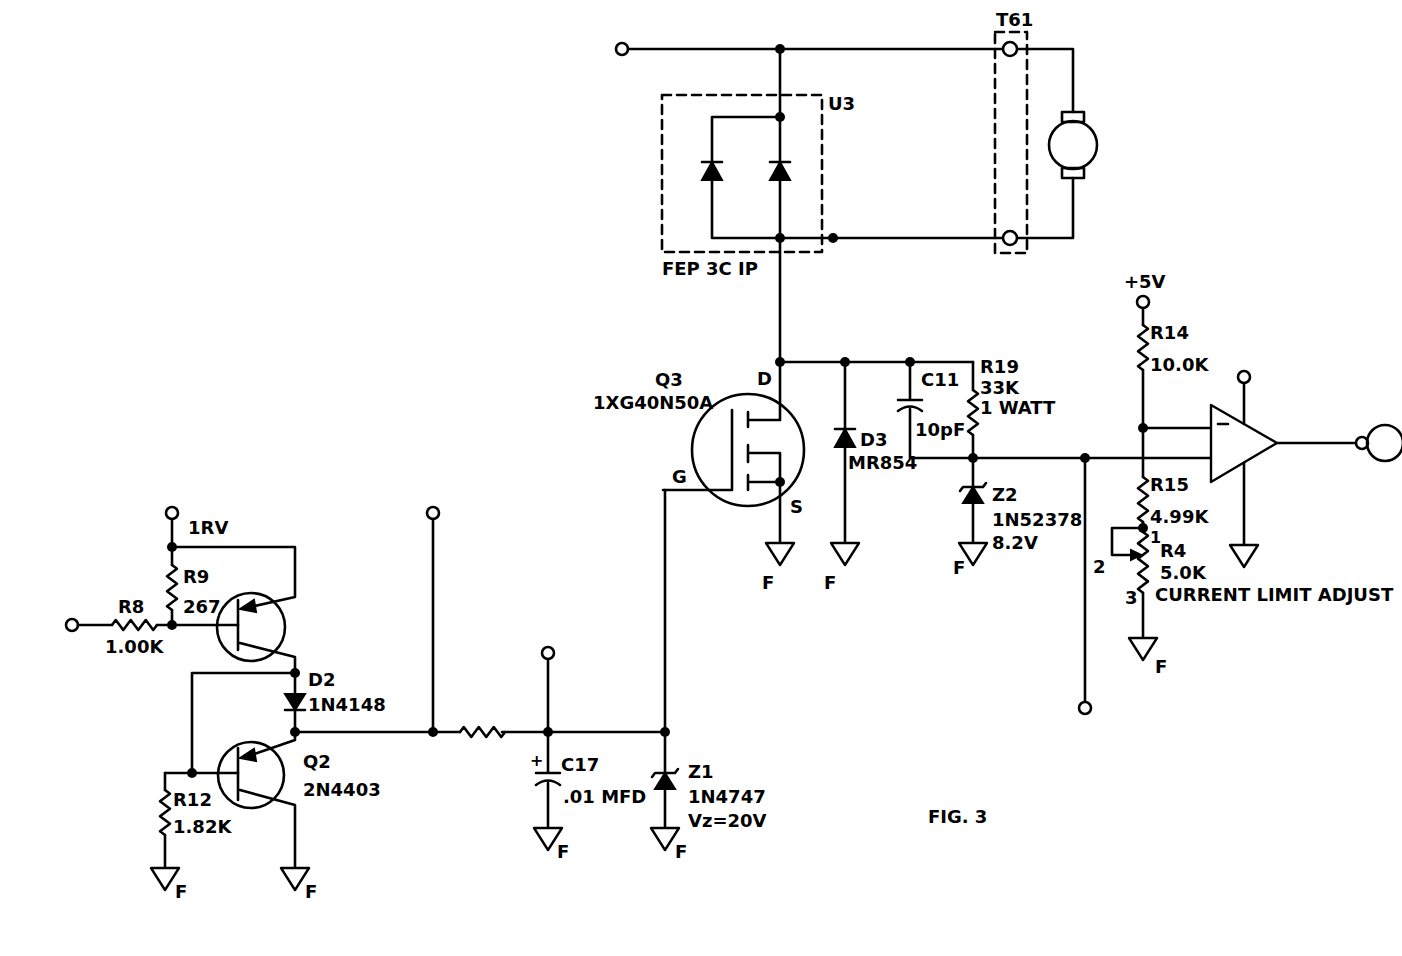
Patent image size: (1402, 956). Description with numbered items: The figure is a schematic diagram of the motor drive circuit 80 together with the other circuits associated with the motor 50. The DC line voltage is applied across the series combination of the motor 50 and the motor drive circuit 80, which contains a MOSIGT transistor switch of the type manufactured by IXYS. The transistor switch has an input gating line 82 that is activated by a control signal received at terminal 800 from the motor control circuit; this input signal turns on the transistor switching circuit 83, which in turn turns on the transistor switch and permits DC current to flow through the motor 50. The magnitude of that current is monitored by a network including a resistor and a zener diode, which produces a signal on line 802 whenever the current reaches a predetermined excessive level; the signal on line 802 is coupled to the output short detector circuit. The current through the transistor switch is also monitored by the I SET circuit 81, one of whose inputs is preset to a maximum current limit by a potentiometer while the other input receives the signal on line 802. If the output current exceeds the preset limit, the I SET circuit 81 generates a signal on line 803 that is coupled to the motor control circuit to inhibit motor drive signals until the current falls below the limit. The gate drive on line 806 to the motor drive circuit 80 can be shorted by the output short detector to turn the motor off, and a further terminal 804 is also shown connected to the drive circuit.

The motor 50 is at (1111, 119).
The motor drive circuit 80 is at (535, 618).
The I SET circuit 81 is at (1258, 397).
The input gating line 82 is at (665, 620).
The transistor switching circuit 83 is at (343, 607).
The terminal 800 is at (78, 616).
The line 802 is at (1085, 652).
The line 803 is at (1337, 442).
The terminal 804 is at (440, 518).
The line 806 is at (554, 650).